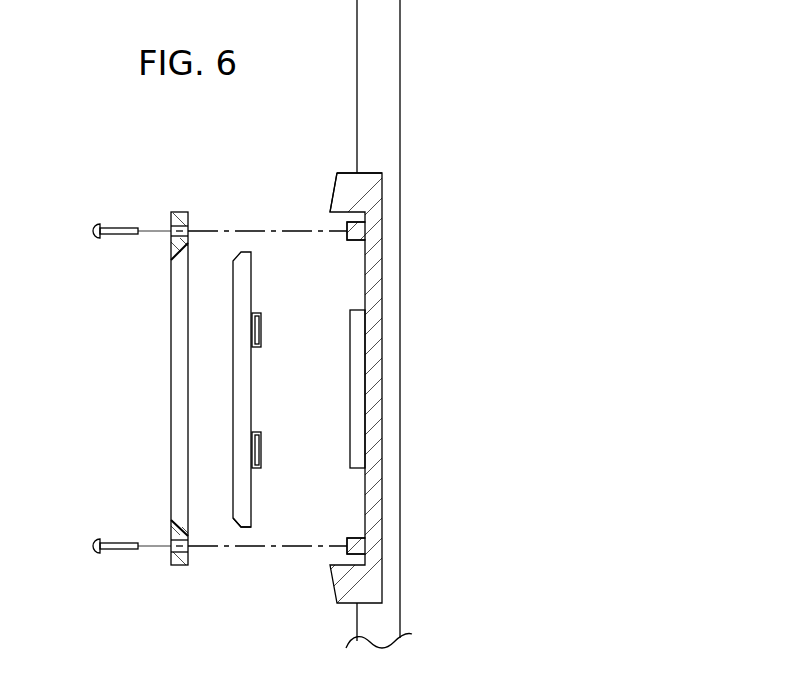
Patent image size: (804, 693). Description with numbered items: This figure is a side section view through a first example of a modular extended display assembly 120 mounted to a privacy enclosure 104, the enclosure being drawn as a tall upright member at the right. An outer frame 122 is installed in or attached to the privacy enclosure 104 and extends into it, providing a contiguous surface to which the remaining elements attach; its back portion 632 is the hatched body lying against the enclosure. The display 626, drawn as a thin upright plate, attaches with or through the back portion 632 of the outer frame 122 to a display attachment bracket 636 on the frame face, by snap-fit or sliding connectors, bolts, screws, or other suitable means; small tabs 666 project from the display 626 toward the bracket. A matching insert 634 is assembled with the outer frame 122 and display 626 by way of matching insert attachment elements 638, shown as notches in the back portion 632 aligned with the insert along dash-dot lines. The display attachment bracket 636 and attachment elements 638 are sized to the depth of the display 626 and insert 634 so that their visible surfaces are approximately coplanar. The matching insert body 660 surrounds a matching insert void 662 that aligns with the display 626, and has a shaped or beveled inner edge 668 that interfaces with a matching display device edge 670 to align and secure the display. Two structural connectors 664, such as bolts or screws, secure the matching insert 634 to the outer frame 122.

The privacy enclosure 104 is at (430, 80).
The modular extended display assembly 120 is at (383, 354).
The outer frame 122 is at (340, 191).
The back portion 632 is at (365, 510).
The matching insert 634 is at (198, 394).
The display attachment bracket 636 is at (350, 318).
The matching insert attachment elements 638 is at (355, 239).
The display 626 is at (232, 368).
The matching insert body 660 is at (172, 555).
The matching insert void 662 is at (171, 456).
The structural connectors 664 is at (115, 228).
The tab 666 is at (261, 328).
The beveled inner edge 668 is at (185, 522).
The display device edge 670 is at (234, 522).